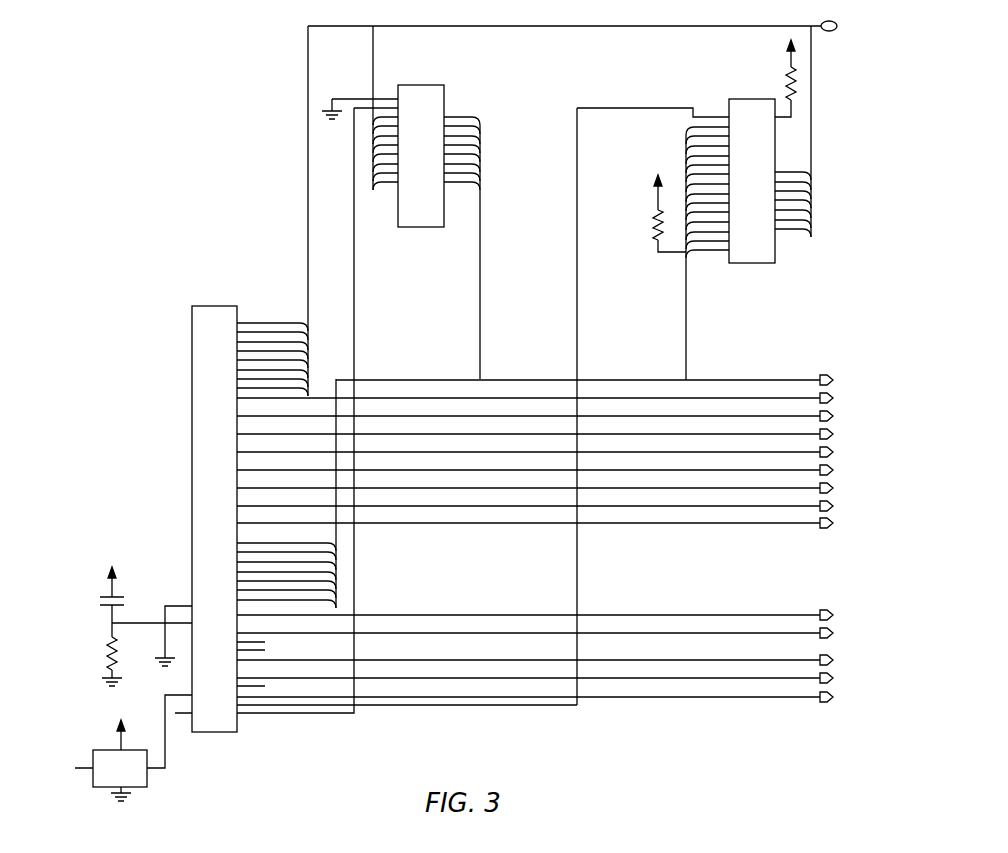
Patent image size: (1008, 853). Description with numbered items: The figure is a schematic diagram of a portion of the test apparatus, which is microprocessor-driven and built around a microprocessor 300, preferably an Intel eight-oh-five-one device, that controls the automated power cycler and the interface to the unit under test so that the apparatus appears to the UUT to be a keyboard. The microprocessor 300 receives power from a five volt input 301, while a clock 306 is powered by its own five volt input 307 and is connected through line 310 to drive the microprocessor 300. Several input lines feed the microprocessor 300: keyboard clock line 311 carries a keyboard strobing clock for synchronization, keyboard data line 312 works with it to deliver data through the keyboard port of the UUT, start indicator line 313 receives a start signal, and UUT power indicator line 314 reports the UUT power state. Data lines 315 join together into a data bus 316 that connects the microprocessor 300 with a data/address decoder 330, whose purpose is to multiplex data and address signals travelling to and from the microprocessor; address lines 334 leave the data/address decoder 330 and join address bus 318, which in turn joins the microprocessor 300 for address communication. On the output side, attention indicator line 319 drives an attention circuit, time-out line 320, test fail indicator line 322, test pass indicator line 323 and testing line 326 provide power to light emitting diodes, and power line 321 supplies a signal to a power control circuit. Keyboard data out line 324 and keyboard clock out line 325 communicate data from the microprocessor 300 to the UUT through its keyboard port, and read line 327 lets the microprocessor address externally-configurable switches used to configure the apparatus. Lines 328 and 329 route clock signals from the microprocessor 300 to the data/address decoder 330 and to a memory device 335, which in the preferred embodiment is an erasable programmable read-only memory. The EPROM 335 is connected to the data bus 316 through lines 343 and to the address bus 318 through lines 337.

The microprocessor 300 is at (192, 328).
The 5 volt input 301 is at (108, 572).
The clock 306 is at (100, 787).
The 5 volt input 307 is at (118, 724).
The line 310 is at (167, 752).
The keyboard clock line 311 is at (838, 386).
The keyboard data line 312 is at (838, 618).
The start indicator line 313 is at (838, 636).
The UUT power indicator line 314 is at (838, 663).
The data lines 315 is at (268, 312).
The data bus 316 is at (308, 156).
The address bus 318 is at (406, 379).
The attention indicator line 319 is at (838, 421).
The time-out line 320 is at (838, 440).
The power line 321 is at (838, 458).
The test fail indicator line 322 is at (838, 476).
The test pass indicator line 323 is at (838, 494).
The keyboard data out line 324 is at (838, 512).
The keyboard clock out line 325 is at (838, 529).
The testing line 326 is at (838, 681).
The read line 327 is at (838, 700).
The line 328 is at (577, 567).
The line 329 is at (310, 717).
The data/address decoder 330 is at (440, 96).
The address lines 334 is at (480, 282).
The memory device 335 is at (748, 107).
The lines 337 is at (672, 162).
The lines 343 is at (829, 180).